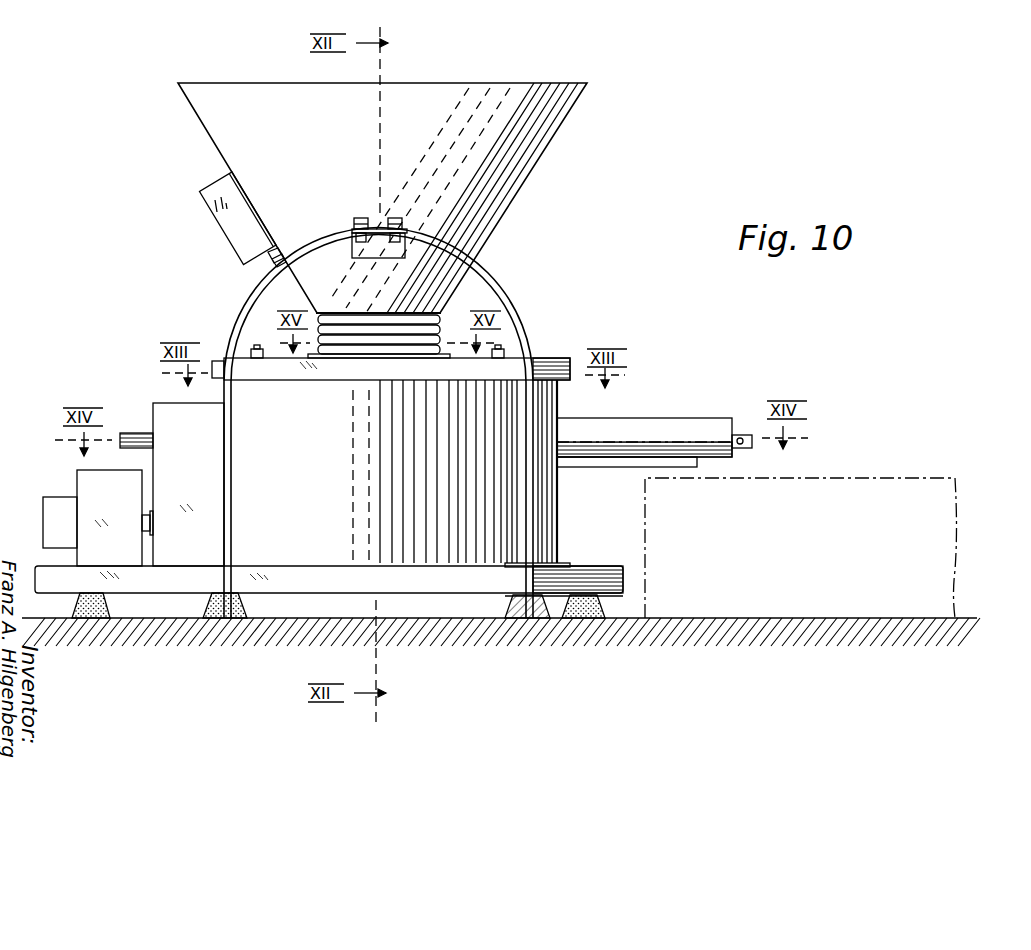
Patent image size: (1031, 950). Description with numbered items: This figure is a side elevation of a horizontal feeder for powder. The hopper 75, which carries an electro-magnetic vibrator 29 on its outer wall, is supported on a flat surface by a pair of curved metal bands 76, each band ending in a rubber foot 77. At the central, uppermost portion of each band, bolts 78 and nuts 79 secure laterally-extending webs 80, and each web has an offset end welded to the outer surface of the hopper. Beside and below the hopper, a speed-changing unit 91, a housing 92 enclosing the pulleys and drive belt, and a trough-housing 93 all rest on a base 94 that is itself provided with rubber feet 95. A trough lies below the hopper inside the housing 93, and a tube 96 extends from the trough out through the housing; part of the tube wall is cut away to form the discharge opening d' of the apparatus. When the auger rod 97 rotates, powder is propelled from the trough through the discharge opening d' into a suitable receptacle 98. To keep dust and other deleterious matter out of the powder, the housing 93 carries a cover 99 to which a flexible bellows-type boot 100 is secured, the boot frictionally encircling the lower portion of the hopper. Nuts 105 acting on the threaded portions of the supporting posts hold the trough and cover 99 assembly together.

The electro-magnetic vibrator 29 is at (231, 237).
The hopper 75 is at (533, 177).
The curved metal band 76 is at (528, 298).
The rubber foot 77 is at (228, 620).
The bolt 78 is at (396, 243).
The nut 79 is at (361, 217).
The laterally-extending web 80 is at (408, 232).
The speed-changing unit 91 is at (78, 478).
The housing 92 is at (160, 404).
The housing 93 is at (558, 523).
The base 94 is at (596, 573).
The rubber foot 95 is at (97, 619).
The tube 96 is at (683, 422).
The auger rod 97 is at (128, 433).
The receptacle 98 is at (858, 478).
The cover 99 is at (553, 362).
The flexible bellows-type boot 100 is at (443, 318).
The nut 105 is at (251, 350).
The discharge opening d' is at (754, 461).